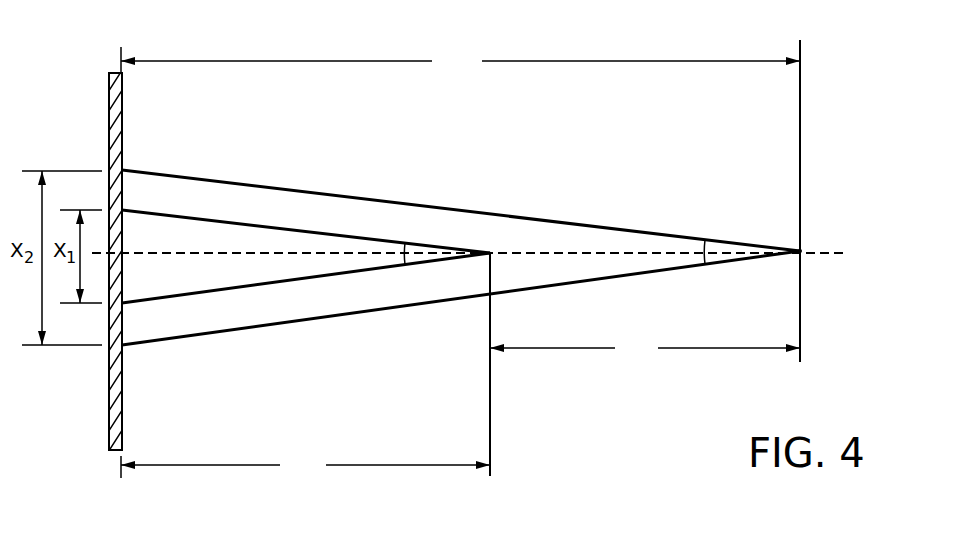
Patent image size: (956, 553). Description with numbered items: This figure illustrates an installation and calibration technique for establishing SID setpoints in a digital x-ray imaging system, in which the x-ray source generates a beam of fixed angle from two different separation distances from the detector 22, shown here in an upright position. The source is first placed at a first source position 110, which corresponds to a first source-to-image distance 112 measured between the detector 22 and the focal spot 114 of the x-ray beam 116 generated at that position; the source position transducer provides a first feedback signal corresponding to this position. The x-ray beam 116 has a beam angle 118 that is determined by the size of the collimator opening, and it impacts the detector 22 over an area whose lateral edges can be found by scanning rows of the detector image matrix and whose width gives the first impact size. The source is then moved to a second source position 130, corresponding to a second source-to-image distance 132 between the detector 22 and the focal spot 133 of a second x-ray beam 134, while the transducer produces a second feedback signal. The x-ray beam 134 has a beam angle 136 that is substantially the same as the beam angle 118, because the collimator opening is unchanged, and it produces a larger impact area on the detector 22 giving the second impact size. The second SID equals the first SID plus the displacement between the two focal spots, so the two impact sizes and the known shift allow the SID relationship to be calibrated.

The detector 22 is at (108, 115).
The first source position 110 is at (518, 458).
The first source-to-image distance 112 is at (284, 487).
The focal spot 114 is at (492, 250).
The x-ray beam 116 is at (328, 232).
The beam angle 118 is at (404, 246).
The second source position 130 is at (817, 117).
The second source-to-image distance 132 is at (473, 41).
The focal spot 133 is at (801, 249).
The x-ray beam 134 is at (214, 178).
The beam angle 136 is at (697, 242).